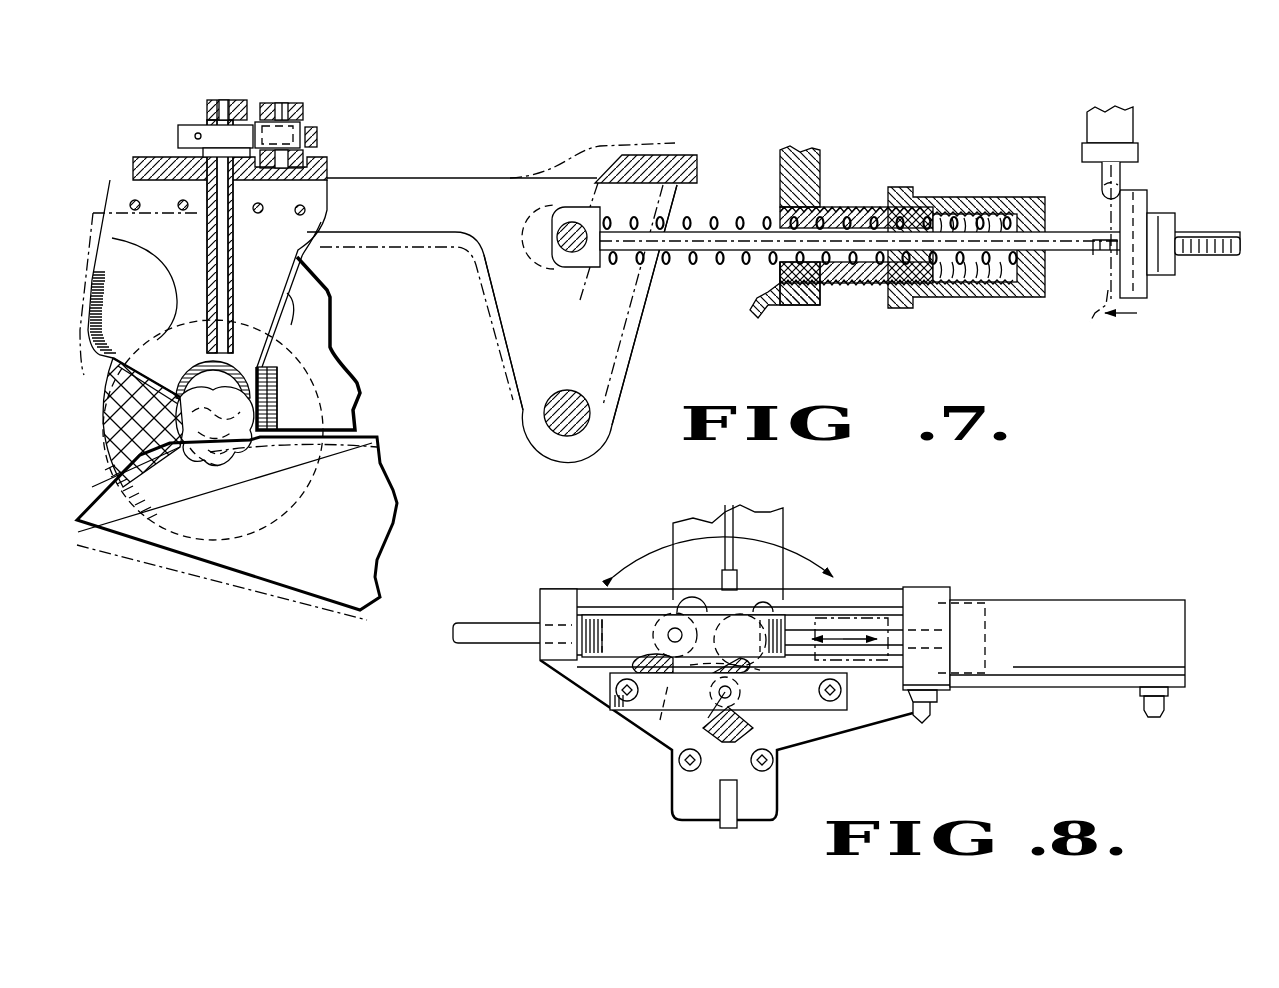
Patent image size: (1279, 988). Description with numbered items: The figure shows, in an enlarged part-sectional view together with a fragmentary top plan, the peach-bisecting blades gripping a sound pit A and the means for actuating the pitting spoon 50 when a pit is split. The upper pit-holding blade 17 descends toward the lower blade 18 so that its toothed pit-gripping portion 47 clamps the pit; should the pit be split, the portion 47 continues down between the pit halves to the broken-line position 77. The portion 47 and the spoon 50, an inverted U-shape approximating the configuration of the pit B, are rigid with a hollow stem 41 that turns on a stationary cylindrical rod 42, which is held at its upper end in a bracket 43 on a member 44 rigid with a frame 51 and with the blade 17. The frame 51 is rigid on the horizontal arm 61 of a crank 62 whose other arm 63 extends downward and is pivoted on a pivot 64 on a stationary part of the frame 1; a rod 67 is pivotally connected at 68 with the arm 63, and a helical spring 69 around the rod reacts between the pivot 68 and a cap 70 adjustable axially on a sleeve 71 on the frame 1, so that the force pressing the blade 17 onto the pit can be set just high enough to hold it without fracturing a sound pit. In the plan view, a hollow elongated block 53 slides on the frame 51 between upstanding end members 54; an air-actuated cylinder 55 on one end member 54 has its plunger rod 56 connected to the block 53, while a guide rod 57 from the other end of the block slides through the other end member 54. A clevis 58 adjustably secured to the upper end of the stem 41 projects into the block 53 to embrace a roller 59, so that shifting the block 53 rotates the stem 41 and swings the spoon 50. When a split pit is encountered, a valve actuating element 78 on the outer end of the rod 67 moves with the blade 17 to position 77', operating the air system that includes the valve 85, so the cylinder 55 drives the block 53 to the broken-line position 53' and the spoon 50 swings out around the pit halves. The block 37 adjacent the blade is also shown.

In FIG. 7, the frame 1 is at (823, 162).
In FIG. 7, the upper pit-holding blade 17 is at (147, 310).
In FIG. 7, the lower blade 18 is at (295, 585).
In FIG. 7, the block 37 is at (357, 411).
In FIG. 7, the stem 41 is at (233, 266).
In FIG. 8, the stem 41 is at (745, 710).
In FIG. 7, the stationary cylindrical rod 42 is at (230, 233).
In FIG. 8, the stationary cylindrical rod 42 is at (713, 717).
In FIG. 7, the bracket 43 is at (215, 100).
In FIG. 8, the bracket 43 is at (800, 700).
In FIG. 7, the member 44 is at (140, 160).
In FIG. 8, the member 44 is at (592, 683).
In FIG. 7, the pit-gripping portion 47 is at (255, 402).
In FIG. 7, the pitting spoon 50 is at (258, 368).
In FIG. 7, the frame 51 is at (350, 170).
In FIG. 8, the frame 51 is at (625, 723).
In FIG. 7, the block 53 is at (309, 94).
In FIG. 8, the block 53 is at (683, 618).
In FIG. 8, the broken line position of block 53' is at (864, 690).
In FIG. 8, the end members 54 is at (558, 590).
In FIG. 8, the air actuated cylinder 55 is at (1070, 598).
In FIG. 8, the plunger rod 56 is at (845, 635).
In FIG. 8, the guide rod 57 is at (495, 625).
In FIG. 7, the clevis 58 is at (320, 134).
In FIG. 8, the clevis 58 is at (663, 722).
In FIG. 7, the roller 59 is at (303, 125).
In FIG. 8, the roller 59 is at (672, 630).
In FIG. 7, the horizontally extending arm 61 is at (433, 236).
In FIG. 7, the crank 62 is at (503, 333).
In FIG. 7, the arm 63 is at (630, 360).
In FIG. 7, the pivot 64 is at (585, 432).
In FIG. 7, the rod 67 is at (877, 250).
In FIG. 7, the pivot 68 is at (560, 232).
In FIG. 7, the helical spring 69 is at (720, 262).
In FIG. 7, the cap 70 is at (953, 297).
In FIG. 7, the sleeve 71 is at (832, 290).
In FIG. 7, the position of pit-engaging portion 77 is at (213, 430).
In FIG. 7, the position of valve actuating element 77' is at (1088, 254).
In FIG. 7, the valve actuating element 78 is at (1145, 196).
In FIG. 7, the valve 85 is at (1125, 126).
In FIG. 7, the sound pit A is at (108, 447).
In FIG. 7, the pit B is at (205, 469).